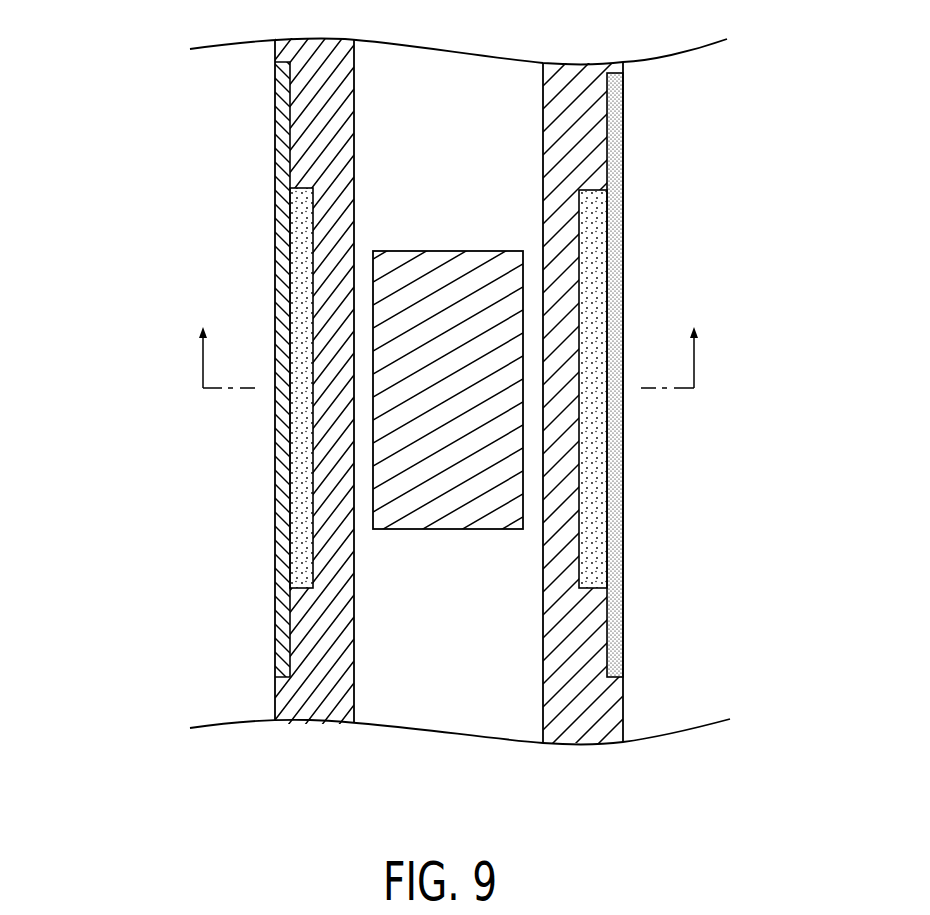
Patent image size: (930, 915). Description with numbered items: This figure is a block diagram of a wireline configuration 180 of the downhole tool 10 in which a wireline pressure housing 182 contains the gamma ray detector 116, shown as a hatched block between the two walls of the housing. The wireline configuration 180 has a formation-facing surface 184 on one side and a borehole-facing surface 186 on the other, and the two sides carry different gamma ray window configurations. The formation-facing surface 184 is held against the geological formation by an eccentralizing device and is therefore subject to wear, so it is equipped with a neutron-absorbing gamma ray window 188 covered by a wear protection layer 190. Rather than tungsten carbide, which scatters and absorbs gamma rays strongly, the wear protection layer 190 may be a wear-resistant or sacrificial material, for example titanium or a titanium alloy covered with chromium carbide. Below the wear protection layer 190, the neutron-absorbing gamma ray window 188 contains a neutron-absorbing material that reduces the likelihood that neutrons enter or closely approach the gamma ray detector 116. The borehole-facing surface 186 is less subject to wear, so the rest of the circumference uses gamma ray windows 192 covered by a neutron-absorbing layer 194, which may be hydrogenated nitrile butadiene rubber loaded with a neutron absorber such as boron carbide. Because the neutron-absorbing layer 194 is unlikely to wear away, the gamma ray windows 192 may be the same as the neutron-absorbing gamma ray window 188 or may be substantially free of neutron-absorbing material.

The section view indicator / apparatus 10 is at (448, 341).
The gamma ray detector 116 is at (436, 262).
The wireline configuration 180 is at (424, 411).
The wireline pressure housing 182 is at (584, 80).
The formation-facing surface 184 is at (264, 404).
The borehole-facing surface 186 is at (656, 411).
The neutron-absorbing gamma ray window 188 is at (295, 226).
The wear protection layer 190 is at (284, 264).
The gamma ray windows 192 is at (592, 223).
The neutron-absorbing layer 194 is at (612, 480).